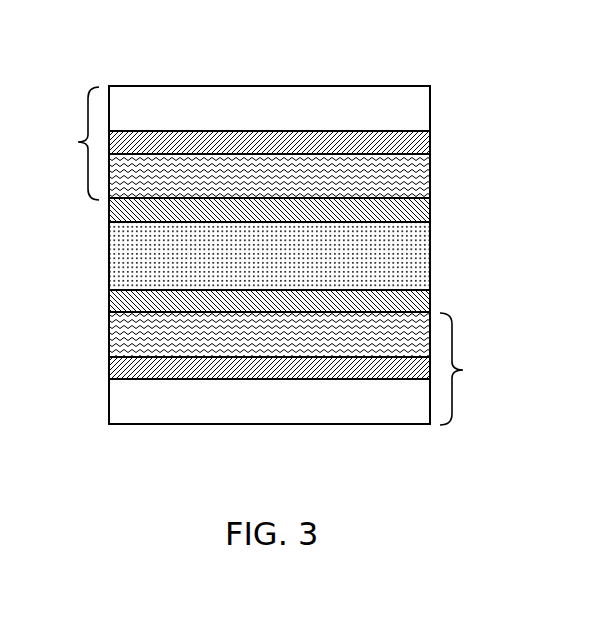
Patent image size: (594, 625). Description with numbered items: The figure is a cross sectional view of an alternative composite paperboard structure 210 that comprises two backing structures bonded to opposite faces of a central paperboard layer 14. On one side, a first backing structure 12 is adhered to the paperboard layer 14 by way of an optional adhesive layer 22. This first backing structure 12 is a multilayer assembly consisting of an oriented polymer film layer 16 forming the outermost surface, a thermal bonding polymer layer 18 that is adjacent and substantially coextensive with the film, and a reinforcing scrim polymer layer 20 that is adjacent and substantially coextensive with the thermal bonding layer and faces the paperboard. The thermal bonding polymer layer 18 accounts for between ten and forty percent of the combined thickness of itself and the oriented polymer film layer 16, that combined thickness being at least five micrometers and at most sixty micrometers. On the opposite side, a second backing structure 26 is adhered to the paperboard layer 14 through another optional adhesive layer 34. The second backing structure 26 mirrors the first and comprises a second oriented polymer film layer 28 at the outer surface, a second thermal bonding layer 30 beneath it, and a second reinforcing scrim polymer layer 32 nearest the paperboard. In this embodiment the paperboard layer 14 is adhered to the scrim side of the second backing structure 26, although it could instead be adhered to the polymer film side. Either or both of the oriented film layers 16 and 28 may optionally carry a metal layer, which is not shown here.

The composite paperboard structure 210 is at (258, 49).
The second backing structure 26 is at (63, 143).
The first backing structure 12 is at (474, 369).
The second oriented polymer film layer 28 is at (418, 110).
The second thermal bonding layer 30 is at (420, 140).
The second reinforcing scrim polymer layer 32 is at (420, 176).
The optional adhesive layer 34 is at (420, 211).
The paperboard layer 14 is at (120, 247).
The optional adhesive layer 22 is at (118, 300).
The reinforcing scrim polymer layer 20 is at (118, 337).
The thermal bonding polymer layer 18 is at (110, 372).
The oriented polymer film layer 16 is at (118, 403).